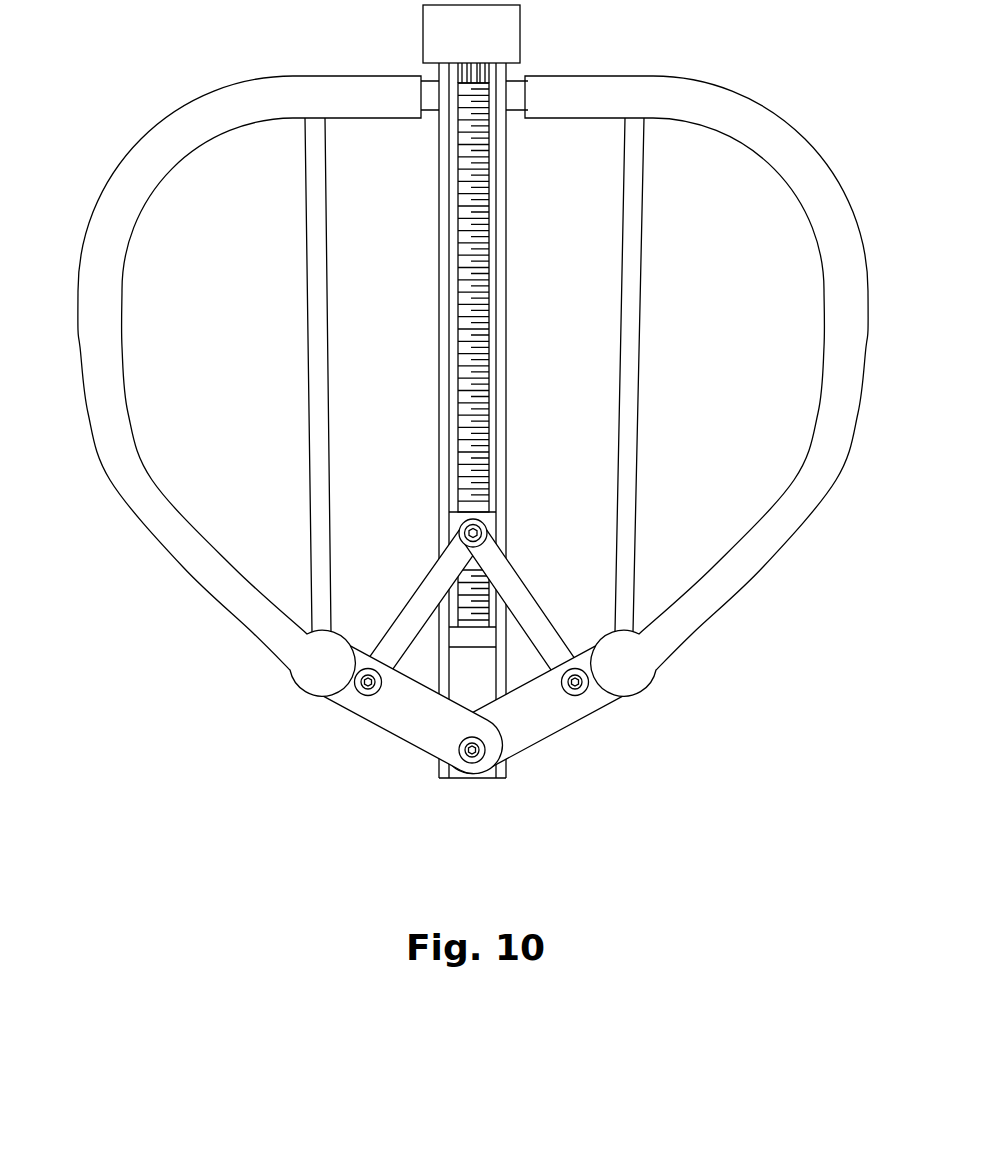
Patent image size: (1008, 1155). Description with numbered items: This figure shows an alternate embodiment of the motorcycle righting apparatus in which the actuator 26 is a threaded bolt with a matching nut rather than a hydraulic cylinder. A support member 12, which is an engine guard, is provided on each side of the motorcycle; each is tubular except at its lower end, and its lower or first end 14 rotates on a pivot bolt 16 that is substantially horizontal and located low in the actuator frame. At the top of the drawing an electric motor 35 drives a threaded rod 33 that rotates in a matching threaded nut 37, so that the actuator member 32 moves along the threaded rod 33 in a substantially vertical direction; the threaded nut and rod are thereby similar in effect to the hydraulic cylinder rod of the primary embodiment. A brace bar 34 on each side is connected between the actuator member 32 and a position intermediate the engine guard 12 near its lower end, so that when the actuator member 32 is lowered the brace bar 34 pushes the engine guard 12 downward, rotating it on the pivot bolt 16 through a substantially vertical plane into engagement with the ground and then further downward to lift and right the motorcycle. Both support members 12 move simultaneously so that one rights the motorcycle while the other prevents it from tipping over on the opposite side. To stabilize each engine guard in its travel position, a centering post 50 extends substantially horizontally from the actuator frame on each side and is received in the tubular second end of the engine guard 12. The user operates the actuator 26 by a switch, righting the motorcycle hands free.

The support member 12 is at (162, 537).
The first end 14 is at (393, 725).
The pivot bolt 16 is at (472, 762).
The actuator 26 is at (457, 172).
The actuator member 32 is at (490, 513).
The threaded rod 33 is at (467, 290).
The brace bar 34 is at (407, 613).
The electric motor 35 is at (513, 32).
The threaded nut 37 is at (456, 520).
The centering post 50 is at (432, 88).